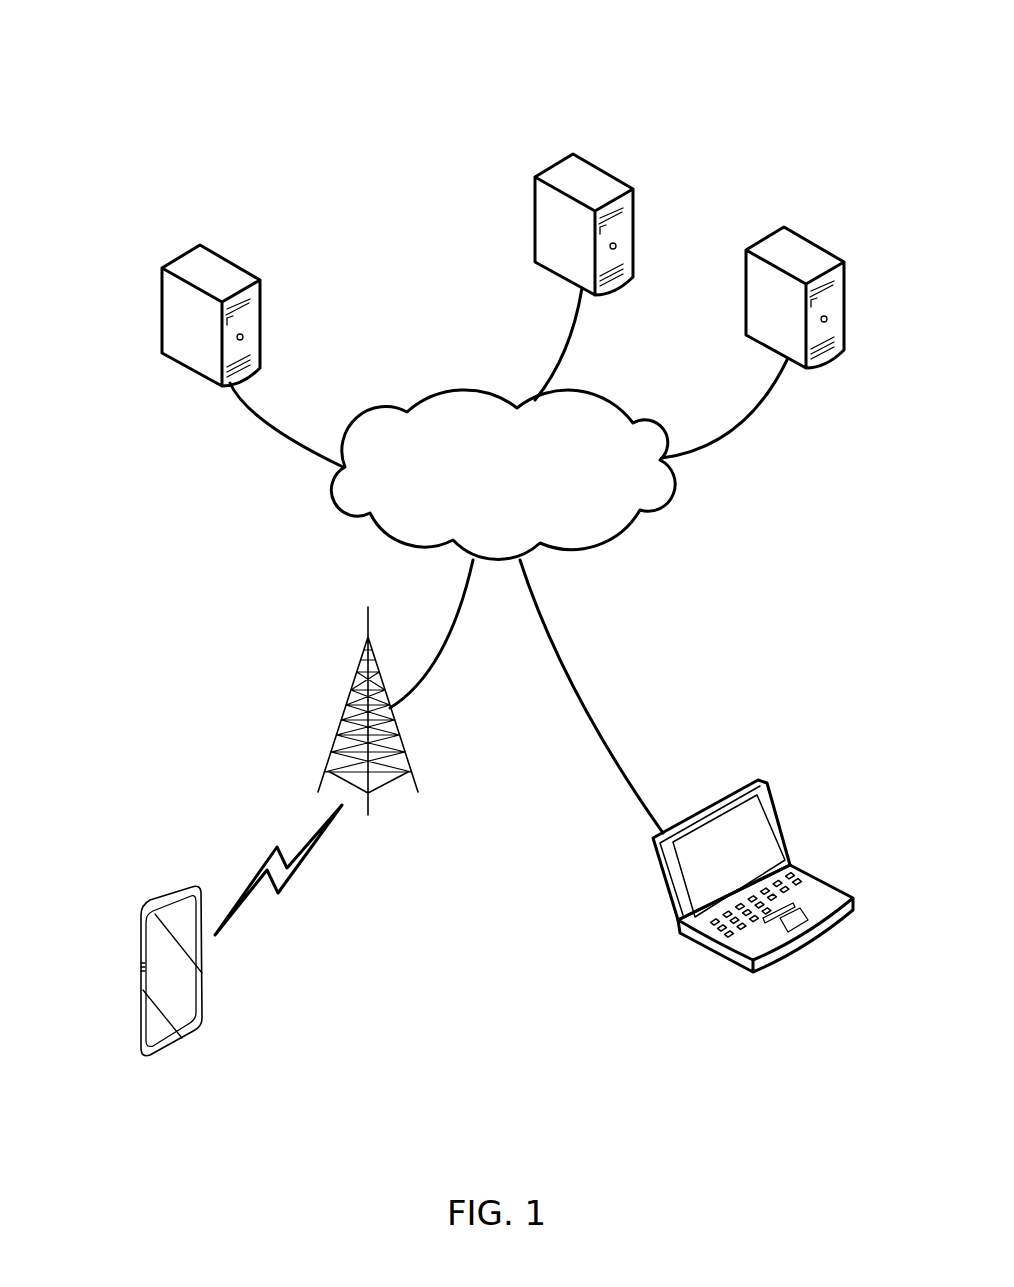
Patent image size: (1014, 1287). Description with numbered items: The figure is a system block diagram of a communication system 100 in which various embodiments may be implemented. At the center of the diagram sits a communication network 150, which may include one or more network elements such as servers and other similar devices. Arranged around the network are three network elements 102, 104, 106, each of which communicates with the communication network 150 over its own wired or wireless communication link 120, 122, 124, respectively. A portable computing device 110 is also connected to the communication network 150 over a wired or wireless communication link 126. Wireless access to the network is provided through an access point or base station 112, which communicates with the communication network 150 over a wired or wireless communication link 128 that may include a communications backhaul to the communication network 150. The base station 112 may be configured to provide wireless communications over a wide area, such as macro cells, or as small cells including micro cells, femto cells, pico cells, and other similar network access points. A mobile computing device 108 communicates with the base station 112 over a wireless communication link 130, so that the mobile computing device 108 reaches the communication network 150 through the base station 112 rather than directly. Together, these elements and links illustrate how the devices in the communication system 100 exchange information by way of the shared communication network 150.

The communication system 100 is at (60, 73).
The network element 102 is at (247, 270).
The network element 104 is at (607, 173).
The network element 106 is at (830, 253).
The mobile computing device 108 is at (202, 1023).
The portable computing device 110 is at (795, 863).
The base station 112 is at (358, 677).
The communication link 120 is at (267, 423).
The communication link 122 is at (575, 337).
The communication link 124 is at (747, 417).
The communication link 126 is at (578, 697).
The communication link 128 is at (440, 657).
The wireless communication link 130 is at (293, 868).
The communication network 150 is at (527, 517).